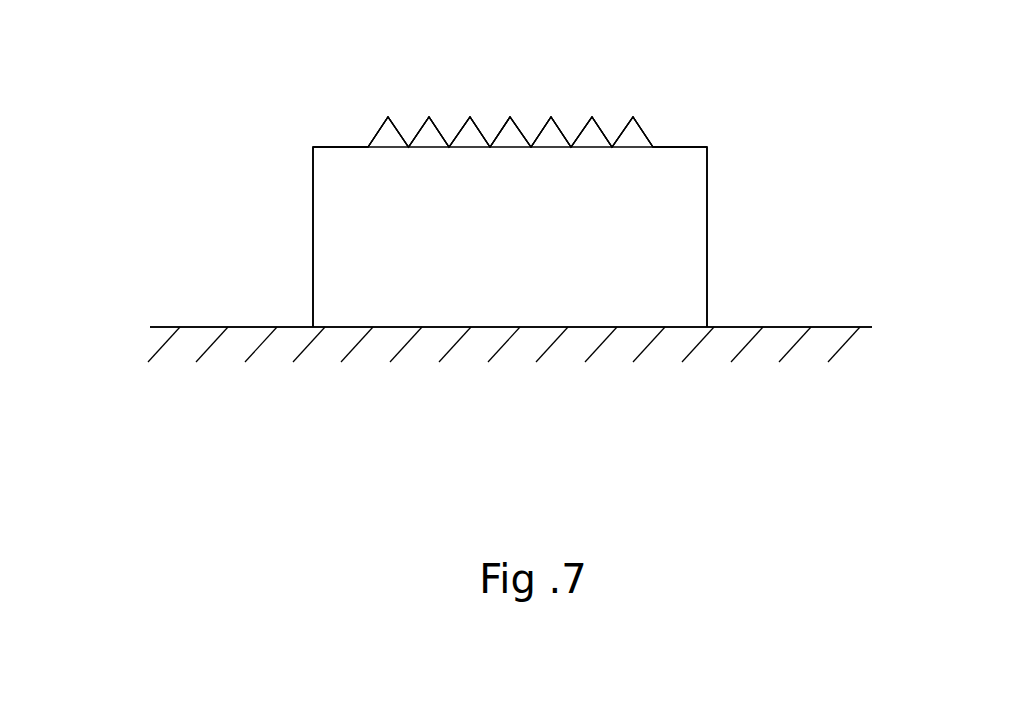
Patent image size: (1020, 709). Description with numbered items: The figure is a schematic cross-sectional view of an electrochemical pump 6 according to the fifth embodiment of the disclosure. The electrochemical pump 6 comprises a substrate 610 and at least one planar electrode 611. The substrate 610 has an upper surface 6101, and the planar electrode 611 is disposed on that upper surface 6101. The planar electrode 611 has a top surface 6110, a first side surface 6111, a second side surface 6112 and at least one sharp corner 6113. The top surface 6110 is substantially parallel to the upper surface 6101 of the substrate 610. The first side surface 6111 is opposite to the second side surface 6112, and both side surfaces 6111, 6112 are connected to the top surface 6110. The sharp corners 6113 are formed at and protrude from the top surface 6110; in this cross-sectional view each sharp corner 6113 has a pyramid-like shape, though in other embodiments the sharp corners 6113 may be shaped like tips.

The electrochemical pump 6 is at (287, 41).
The substrate 610 is at (820, 350).
The upper surface 6101 is at (195, 327).
The planar electrode 611 is at (595, 295).
The top surface 6110 is at (685, 147).
The first side surface 6111 is at (313, 237).
The second side surface 6112 is at (708, 237).
The sharp corner 6113 is at (510, 97).